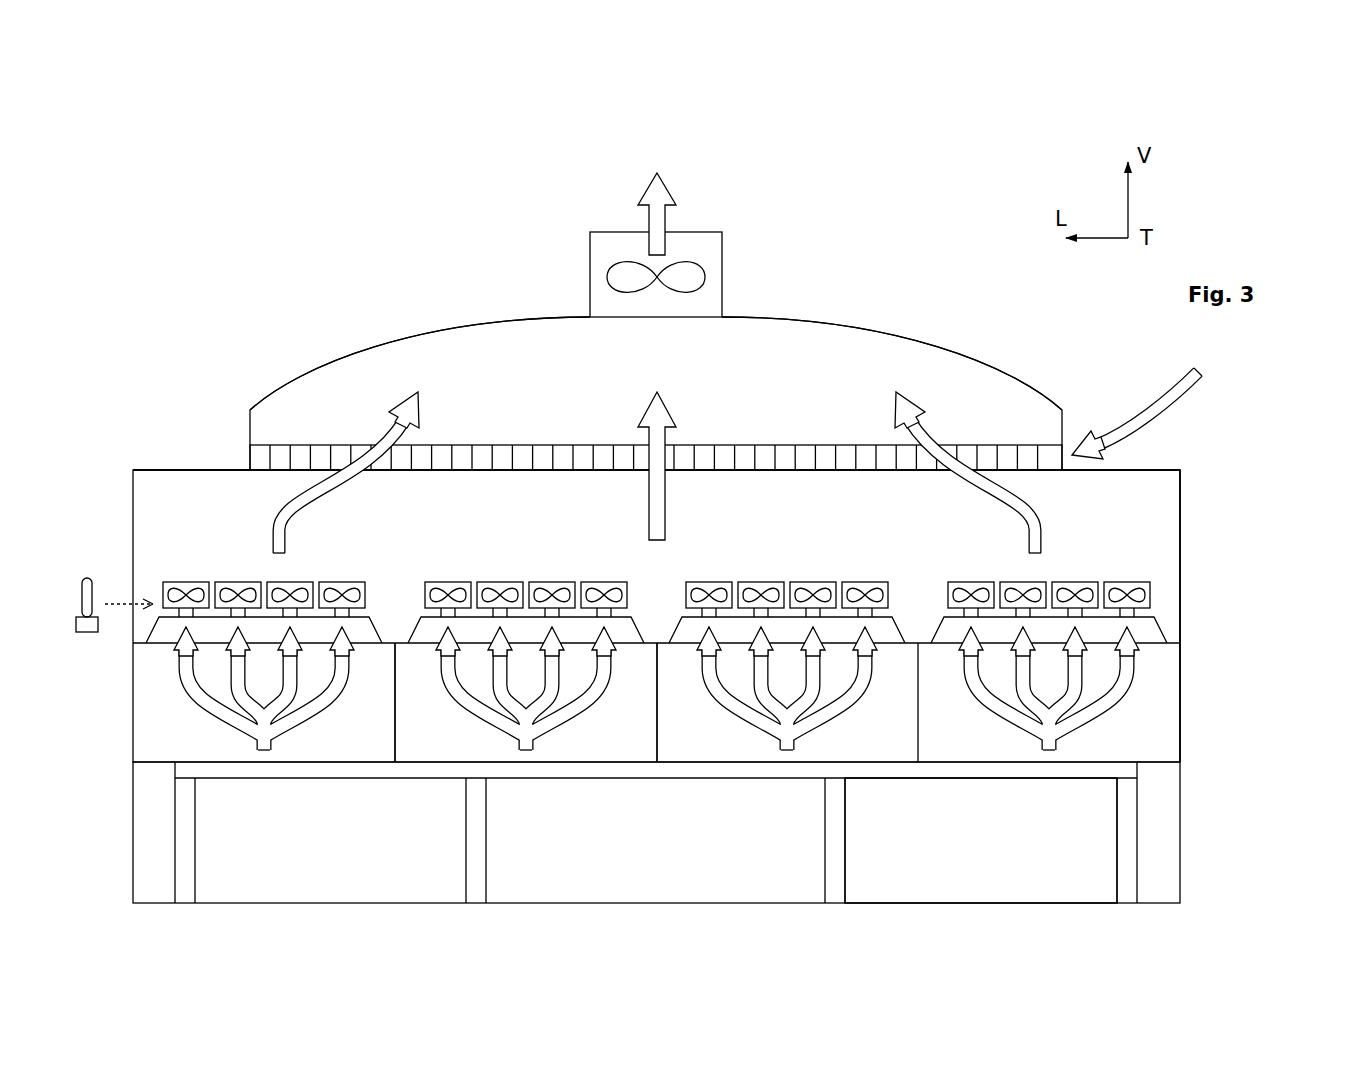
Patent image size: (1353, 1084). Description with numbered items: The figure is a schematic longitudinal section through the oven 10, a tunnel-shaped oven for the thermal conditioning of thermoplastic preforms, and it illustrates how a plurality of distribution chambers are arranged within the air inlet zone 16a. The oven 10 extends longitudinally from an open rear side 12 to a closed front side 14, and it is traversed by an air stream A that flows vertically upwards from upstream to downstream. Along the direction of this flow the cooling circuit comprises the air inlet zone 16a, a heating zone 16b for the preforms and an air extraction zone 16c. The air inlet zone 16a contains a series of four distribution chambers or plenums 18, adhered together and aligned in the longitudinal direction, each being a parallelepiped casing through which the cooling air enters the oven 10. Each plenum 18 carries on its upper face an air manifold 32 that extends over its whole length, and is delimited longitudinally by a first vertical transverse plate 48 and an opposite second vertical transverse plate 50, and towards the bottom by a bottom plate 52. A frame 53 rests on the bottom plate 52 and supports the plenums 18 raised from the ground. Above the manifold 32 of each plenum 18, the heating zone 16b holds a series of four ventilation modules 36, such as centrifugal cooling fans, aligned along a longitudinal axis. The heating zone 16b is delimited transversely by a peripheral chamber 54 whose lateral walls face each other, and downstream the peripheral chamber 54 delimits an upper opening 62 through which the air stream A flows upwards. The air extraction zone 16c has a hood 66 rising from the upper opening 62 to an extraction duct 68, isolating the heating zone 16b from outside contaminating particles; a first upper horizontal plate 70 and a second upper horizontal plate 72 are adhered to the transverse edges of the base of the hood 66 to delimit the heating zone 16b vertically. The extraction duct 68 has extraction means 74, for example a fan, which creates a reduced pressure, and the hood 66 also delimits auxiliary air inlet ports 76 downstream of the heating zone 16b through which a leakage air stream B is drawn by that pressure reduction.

The oven 10 is at (310, 231).
The rear side 12 is at (110, 705).
The front side 14 is at (1238, 686).
The air inlet zone 16a is at (1205, 718).
The heating zone 16b is at (1193, 502).
The air extraction zone 16c is at (1044, 342).
The distribution chamber 18 is at (280, 802).
The air manifold 32 is at (381, 604).
The ventilation module 36 is at (184, 571).
The first vertical transverse plate 48 is at (388, 737).
The second vertical transverse plate 50 is at (657, 737).
The bottom plate 52 is at (558, 770).
The frame 53 is at (863, 851).
The peripheral chamber 54 is at (1200, 563).
The upper opening 62 is at (162, 497).
The hood 66 is at (467, 297).
The extraction duct 68 is at (718, 219).
The first upper horizontal plate 70 is at (1135, 464).
The second upper horizontal plate 72 is at (180, 468).
The extraction means 74 is at (713, 265).
The auxiliary air inlet ports 76 is at (280, 461).
The air stream A is at (335, 495).
The leakage air stream B is at (1160, 385).